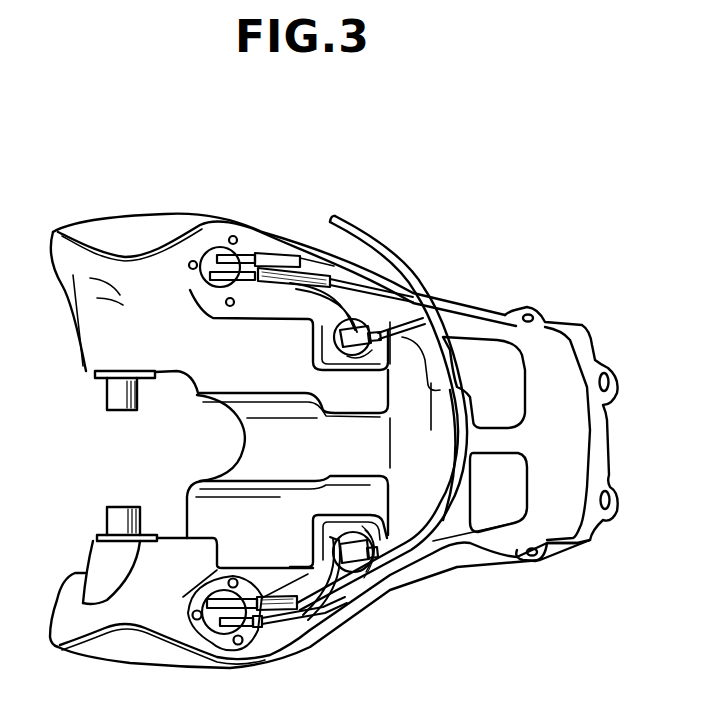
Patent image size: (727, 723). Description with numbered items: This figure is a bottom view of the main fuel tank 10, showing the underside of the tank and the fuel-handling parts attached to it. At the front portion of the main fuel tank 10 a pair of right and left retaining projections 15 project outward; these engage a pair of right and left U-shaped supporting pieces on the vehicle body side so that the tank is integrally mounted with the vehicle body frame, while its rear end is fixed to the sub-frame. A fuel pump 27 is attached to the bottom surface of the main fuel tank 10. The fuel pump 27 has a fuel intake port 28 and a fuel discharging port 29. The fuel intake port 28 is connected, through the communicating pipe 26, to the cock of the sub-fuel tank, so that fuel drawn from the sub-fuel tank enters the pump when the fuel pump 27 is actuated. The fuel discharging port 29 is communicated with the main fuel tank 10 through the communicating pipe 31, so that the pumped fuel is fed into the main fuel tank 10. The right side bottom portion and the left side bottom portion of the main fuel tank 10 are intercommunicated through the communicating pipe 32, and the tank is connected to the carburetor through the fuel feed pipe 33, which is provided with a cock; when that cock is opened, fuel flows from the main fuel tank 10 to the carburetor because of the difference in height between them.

The main fuel tank 10 is at (478, 291).
The retaining projections 15 is at (108, 390).
The communicating pipe 26 is at (338, 583).
The fuel pump 27 is at (210, 625).
The fuel intake port 28 is at (255, 636).
The fuel discharging port 29 is at (232, 625).
The communicating pipe 31 is at (347, 572).
The communicating pipe 32 is at (433, 530).
The fuel feed pipe 33 is at (388, 254).